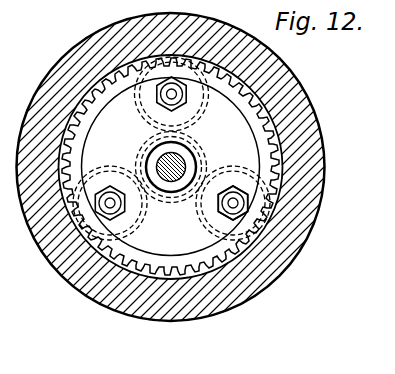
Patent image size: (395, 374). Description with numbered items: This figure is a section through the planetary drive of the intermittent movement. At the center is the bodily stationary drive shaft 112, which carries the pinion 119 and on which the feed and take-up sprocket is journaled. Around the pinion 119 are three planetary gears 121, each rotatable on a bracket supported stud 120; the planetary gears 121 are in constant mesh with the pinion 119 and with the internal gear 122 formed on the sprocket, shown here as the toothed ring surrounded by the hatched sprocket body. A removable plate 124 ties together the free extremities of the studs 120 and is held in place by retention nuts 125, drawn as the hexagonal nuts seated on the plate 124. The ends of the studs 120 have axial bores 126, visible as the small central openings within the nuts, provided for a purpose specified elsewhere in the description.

The drive shaft 112 is at (178, 161).
The pinion 119 is at (136, 146).
The studs 120 is at (187, 97).
The planetary gears 121 is at (121, 169).
The internal gear 122 is at (279, 118).
The removable plate 124 is at (255, 155).
The retention nuts 125 is at (246, 210).
The axial bores 126 is at (170, 93).